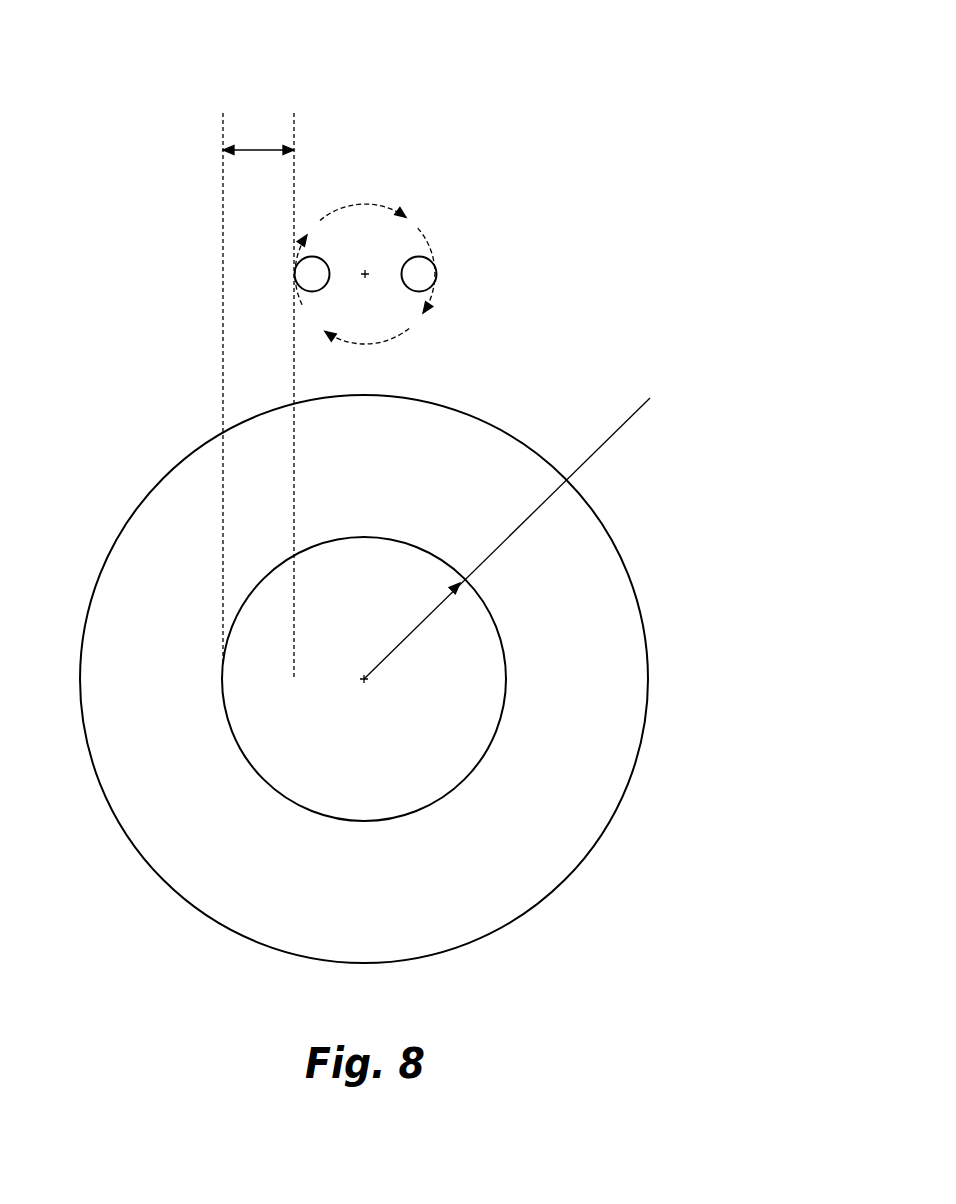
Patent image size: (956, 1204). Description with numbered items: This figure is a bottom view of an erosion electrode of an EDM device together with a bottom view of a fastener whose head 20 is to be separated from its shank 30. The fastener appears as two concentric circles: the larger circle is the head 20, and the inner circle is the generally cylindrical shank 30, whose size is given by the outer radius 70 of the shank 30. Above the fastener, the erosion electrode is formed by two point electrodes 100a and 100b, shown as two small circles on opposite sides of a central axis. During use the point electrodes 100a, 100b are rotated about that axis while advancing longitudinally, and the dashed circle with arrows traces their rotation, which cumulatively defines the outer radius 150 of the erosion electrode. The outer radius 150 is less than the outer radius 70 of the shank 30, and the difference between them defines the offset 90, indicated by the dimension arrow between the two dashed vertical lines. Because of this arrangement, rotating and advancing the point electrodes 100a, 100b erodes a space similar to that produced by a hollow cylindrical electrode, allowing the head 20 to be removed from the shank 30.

The head 20 is at (613, 538).
The shank 30 is at (505, 642).
The outer radius of shank 70 is at (650, 398).
The offset 90 is at (258, 150).
The point electrode 100a is at (419, 274).
The point electrode 100b is at (312, 274).
The outer radius of erosion electrode 150 is at (368, 270).